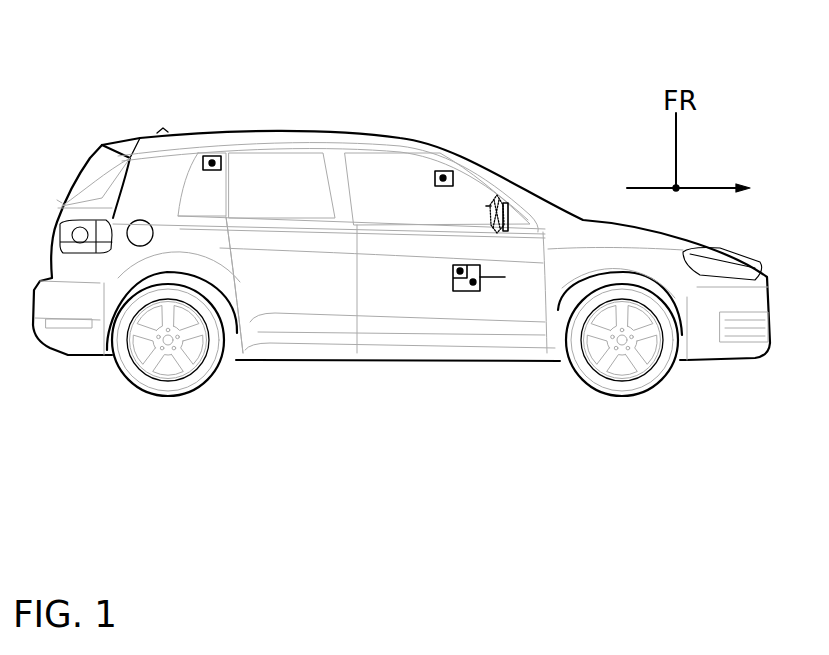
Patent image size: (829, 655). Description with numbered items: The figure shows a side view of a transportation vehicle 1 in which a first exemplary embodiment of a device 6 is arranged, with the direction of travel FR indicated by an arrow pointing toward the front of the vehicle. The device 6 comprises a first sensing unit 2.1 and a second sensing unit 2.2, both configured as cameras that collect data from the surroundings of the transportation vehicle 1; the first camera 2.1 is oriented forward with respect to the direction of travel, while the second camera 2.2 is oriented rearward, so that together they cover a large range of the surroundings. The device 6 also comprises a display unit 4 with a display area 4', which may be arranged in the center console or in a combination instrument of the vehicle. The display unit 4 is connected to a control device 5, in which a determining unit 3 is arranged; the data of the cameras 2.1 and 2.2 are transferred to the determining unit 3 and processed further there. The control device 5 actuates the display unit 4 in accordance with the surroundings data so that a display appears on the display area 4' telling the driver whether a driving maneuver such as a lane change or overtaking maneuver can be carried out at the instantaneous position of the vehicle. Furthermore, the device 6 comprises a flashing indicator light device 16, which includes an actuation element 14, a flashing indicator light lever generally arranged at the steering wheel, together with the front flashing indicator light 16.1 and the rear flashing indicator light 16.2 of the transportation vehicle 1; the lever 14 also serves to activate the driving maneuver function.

The transportation vehicle 1 is at (200, 123).
The first sensing unit 2.1 is at (443, 177).
The second sensing unit 2.2 is at (212, 162).
The determining unit 3 is at (460, 272).
The display unit 4 is at (526, 152).
The display area 4' is at (497, 318).
The control device 5 is at (473, 283).
The device 6 is at (410, 292).
The actuation element 14 is at (486, 206).
The flashing indicator light device 16 is at (687, 501).
The front flashing indicator light 16.1 is at (697, 277).
The rear flashing indicator light 16.2 is at (100, 246).